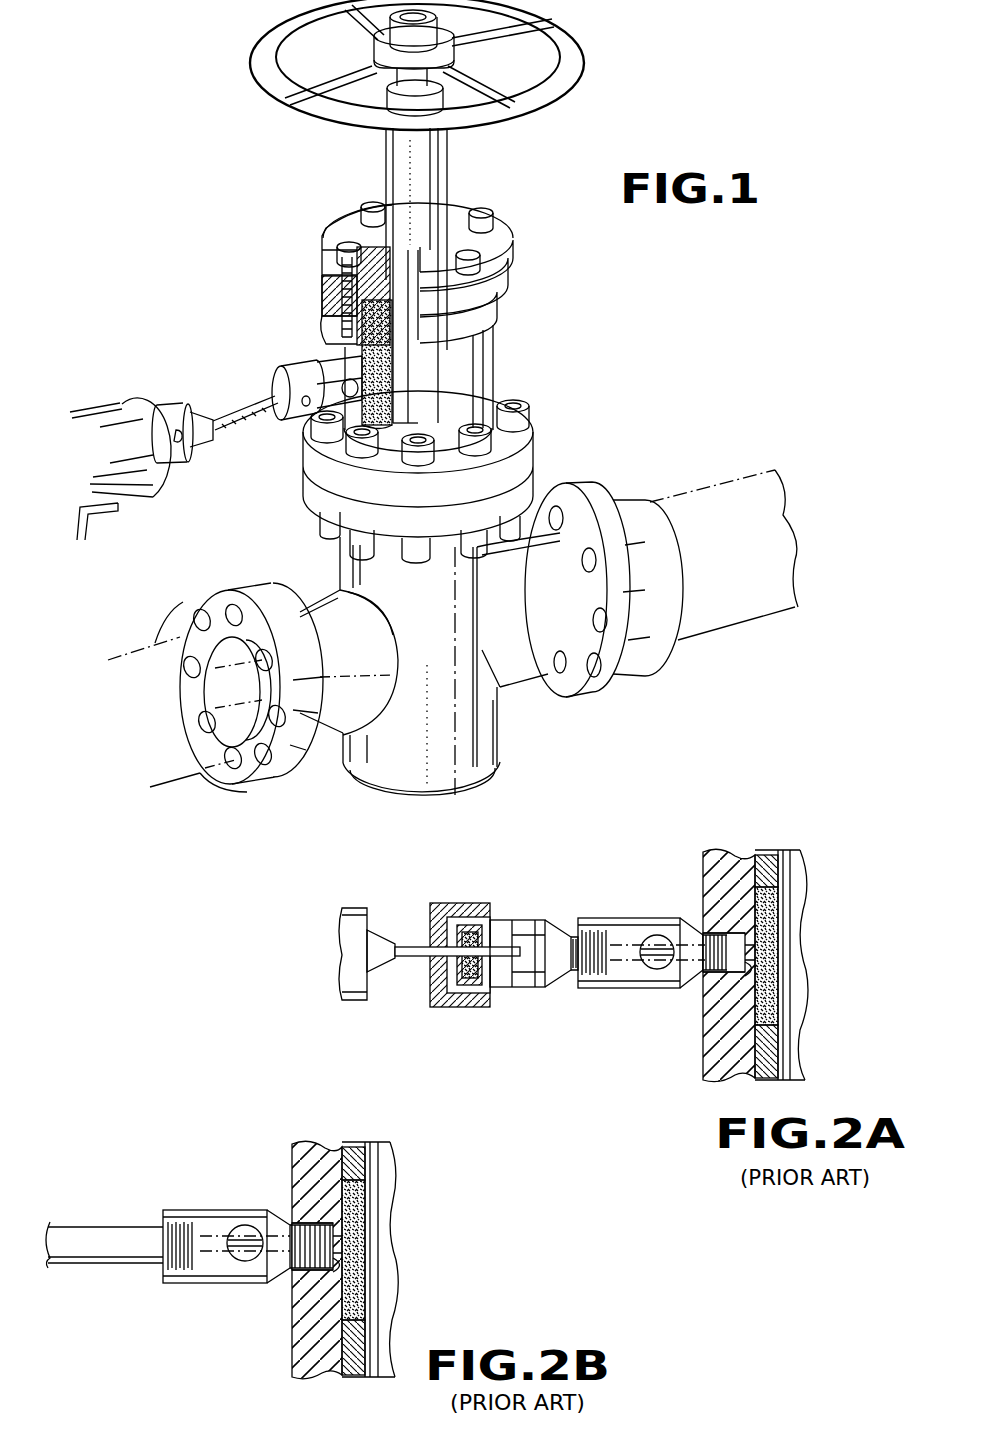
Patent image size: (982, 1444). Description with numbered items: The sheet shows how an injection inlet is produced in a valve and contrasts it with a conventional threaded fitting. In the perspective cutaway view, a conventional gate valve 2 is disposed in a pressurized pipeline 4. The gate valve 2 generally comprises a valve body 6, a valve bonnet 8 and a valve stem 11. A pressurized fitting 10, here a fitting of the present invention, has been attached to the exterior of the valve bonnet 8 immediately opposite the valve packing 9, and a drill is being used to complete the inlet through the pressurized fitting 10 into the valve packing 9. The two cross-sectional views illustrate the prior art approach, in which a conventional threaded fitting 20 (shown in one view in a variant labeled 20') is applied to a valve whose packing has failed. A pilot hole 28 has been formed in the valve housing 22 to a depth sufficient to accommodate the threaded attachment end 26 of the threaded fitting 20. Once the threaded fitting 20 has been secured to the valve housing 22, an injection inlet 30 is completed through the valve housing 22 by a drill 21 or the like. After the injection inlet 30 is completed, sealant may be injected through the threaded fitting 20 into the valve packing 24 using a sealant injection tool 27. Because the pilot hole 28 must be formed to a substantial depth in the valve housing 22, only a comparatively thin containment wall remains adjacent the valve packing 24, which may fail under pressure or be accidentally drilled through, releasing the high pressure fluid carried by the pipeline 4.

In FIG. 1, the gate valve 2 is at (540, 332).
In FIG. 1, the pipeline 4 is at (748, 615).
In FIG. 1, the valve body 6 is at (508, 745).
In FIG. 1, the valve bonnet 8 is at (495, 373).
In FIG. 1, the valve packing 9 is at (495, 378).
In FIG. 1, the pressurized fitting 10 is at (323, 367).
In FIG. 1, the valve stem 11 is at (455, 172).
In FIG. 2B, the threaded fitting 20 is at (243, 1296).
In FIG. 2A, the injection fitting 20' is at (646, 1002).
In FIG. 2A, the drill 21 is at (420, 960).
In FIG. 2A, the valve housing 22 is at (703, 1070).
In FIG. 2A, the valve packing 24 is at (780, 908).
In FIG. 2B, the valve packing 24 is at (367, 1202).
In FIG. 2A, the threaded attachment end 26 is at (703, 930).
In FIG. 2B, the threaded attachment end 26 is at (290, 1223).
In FIG. 2B, the sealant injection tool 27 is at (103, 1265).
In FIG. 2A, the pilot hole 28 is at (700, 997).
In FIG. 2B, the pilot hole 28 is at (290, 1287).
In FIG. 2A, the injection inlet 30 is at (777, 973).
In FIG. 2B, the injection inlet 30 is at (367, 1261).